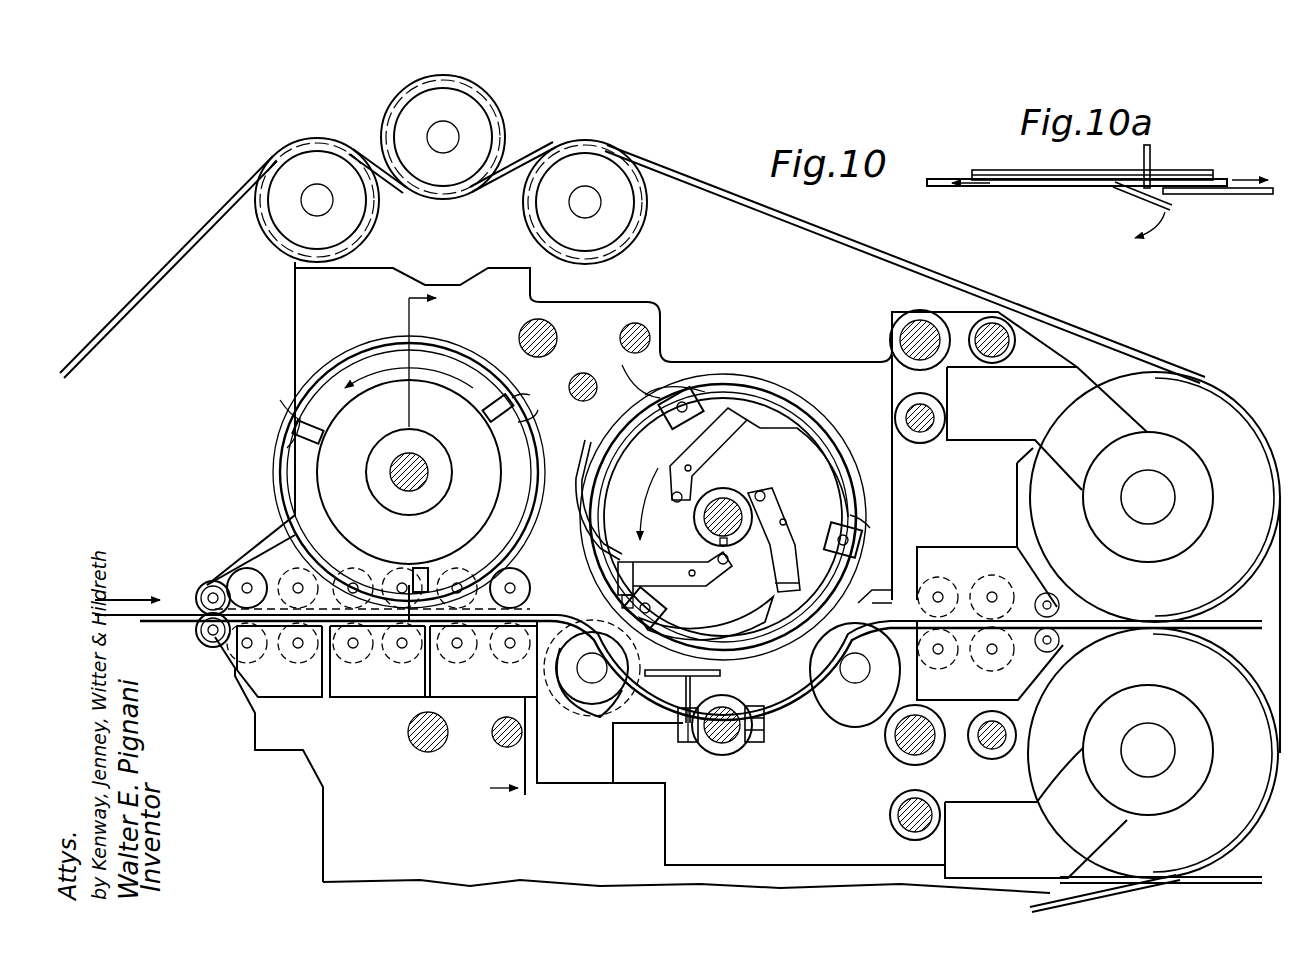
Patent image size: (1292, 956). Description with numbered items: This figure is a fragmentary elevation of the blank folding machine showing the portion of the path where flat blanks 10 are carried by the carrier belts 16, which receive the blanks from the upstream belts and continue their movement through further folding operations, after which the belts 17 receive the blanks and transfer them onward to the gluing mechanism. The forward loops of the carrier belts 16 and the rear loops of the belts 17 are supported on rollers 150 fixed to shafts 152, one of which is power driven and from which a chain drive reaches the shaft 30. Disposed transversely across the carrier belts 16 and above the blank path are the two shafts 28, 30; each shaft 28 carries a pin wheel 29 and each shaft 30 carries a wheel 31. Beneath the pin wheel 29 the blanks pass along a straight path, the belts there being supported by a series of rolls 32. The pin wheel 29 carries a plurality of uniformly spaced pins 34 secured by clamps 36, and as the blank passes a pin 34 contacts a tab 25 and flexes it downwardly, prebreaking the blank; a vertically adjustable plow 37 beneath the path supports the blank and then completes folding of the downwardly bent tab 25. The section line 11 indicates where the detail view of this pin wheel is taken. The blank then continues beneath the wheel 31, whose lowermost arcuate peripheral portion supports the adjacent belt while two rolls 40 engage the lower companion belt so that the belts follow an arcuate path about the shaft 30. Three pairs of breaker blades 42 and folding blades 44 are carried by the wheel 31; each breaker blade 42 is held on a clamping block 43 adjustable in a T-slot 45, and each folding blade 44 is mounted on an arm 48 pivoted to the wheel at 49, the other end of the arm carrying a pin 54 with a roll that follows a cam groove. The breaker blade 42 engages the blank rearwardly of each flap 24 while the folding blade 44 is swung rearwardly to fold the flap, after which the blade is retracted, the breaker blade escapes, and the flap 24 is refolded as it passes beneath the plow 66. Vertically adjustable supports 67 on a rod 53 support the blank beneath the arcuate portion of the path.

In FIG. 10A, the flat blank 10 is at (975, 186).
In FIG. 10, the section line 11— 11 is at (490, 797).
In FIG. 10, the carrier belts 16 is at (92, 342).
In FIG. 10A, the carrier belts 16 is at (1210, 172).
In FIG. 10, the belts 17 is at (1228, 624).
In FIG. 10, the flaps 24 is at (688, 632).
In FIG. 10, the tabs 25 is at (365, 655).
In FIG. 10A, the tabs 25 is at (1175, 206).
In FIG. 10, the shaft 28 is at (422, 470).
In FIG. 10, the pin wheel 29 is at (292, 437).
In FIG. 10, the shaft 30 is at (732, 503).
In FIG. 10, the wheel 31 is at (788, 398).
In FIG. 10, the rolls 32 is at (265, 655).
In FIG. 10, the pin 34 is at (280, 400).
In FIG. 10A, the pin 34 is at (1152, 160).
In FIG. 10, the clamp 36 is at (290, 448).
In FIG. 10, the plow 37 is at (458, 655).
In FIG. 10A, the plow 37 is at (1248, 196).
In FIG. 10, the roll 40 is at (602, 715).
In FIG. 10, the breaker blade 42 is at (905, 506).
In FIG. 10, the clamping block 43 is at (852, 515).
In FIG. 10, the folding blade 44 is at (590, 440).
In FIG. 10, the T-slot 45 is at (790, 422).
In FIG. 10, the arm 48 is at (708, 438).
In FIG. 10, the pivot 49 is at (785, 520).
In FIG. 10, the rod 53 is at (726, 755).
In FIG. 10, the pin 54 is at (765, 490).
In FIG. 10, the plow 66 is at (875, 597).
In FIG. 10, the supports 67 is at (670, 678).
In FIG. 10, the roller 150 is at (1178, 410).
In FIG. 10, the shaft 152 is at (1166, 517).